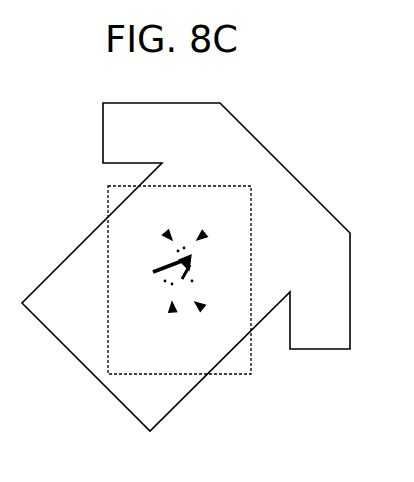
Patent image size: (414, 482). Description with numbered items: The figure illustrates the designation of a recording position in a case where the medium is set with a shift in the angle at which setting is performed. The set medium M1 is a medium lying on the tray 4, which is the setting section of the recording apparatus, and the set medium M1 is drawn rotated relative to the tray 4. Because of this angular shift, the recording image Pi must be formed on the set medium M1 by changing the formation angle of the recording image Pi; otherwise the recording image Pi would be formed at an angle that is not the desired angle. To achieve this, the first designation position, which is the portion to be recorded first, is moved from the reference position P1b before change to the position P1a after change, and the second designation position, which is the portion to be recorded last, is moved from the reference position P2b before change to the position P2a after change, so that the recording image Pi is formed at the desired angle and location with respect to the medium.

The set medium M1 is at (243, 125).
The tray 4 is at (127, 374).
The recording image Pi is at (153, 272).
The position after change of first designation position P1a is at (197, 240).
The position before change of first designation position P1b is at (172, 240).
The position after change of second designation position P2a is at (172, 302).
The position before change of second designation position P2b is at (195, 302).